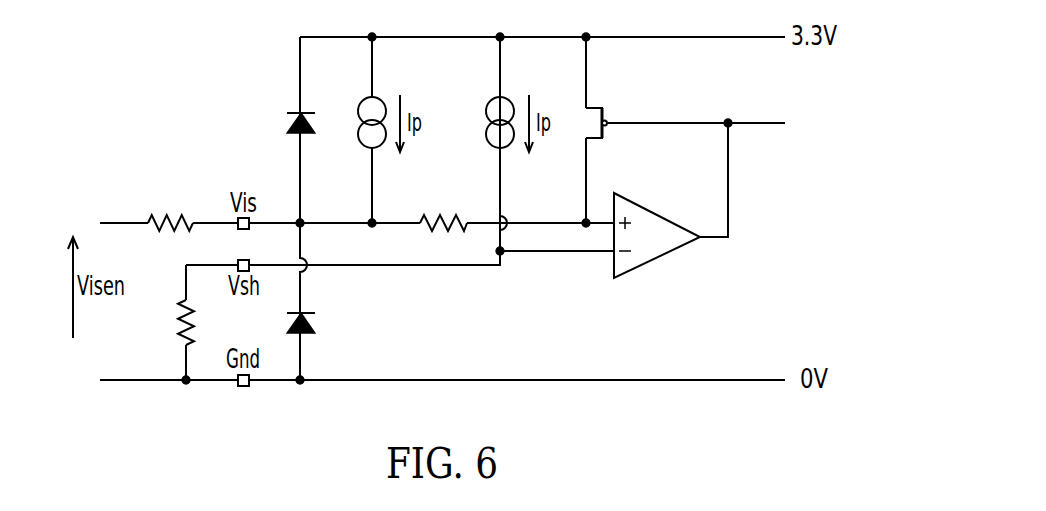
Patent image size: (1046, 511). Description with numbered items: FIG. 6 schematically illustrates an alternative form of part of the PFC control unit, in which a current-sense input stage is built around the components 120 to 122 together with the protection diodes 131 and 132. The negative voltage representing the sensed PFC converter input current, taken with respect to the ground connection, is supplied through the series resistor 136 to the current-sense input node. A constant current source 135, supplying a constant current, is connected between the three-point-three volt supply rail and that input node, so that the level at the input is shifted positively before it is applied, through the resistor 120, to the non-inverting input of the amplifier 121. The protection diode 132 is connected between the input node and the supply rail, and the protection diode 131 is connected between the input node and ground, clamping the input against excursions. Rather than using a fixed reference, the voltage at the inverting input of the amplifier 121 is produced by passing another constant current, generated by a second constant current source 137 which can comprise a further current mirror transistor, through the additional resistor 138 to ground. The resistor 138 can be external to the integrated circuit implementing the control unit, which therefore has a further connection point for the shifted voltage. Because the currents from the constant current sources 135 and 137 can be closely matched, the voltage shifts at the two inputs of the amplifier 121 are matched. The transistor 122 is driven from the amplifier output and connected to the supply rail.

The resistor 120 is at (452, 217).
The amplifier 121 is at (657, 218).
The transistor 122 is at (605, 108).
The protection diode 131 is at (310, 318).
The protection diode 132 is at (287, 124).
The constant current source 135 is at (357, 124).
The series resistor 136 is at (173, 212).
The constant current source 137 is at (483, 123).
The additional resistor 138 is at (198, 322).